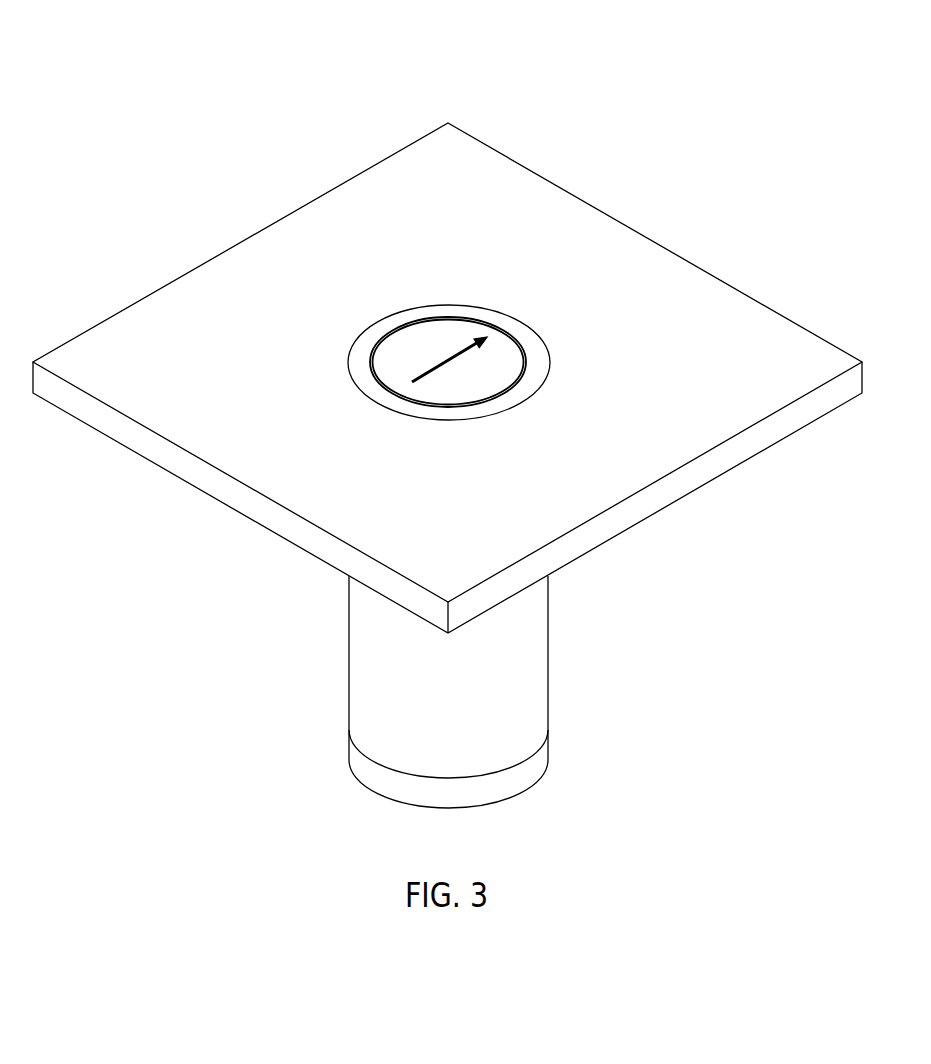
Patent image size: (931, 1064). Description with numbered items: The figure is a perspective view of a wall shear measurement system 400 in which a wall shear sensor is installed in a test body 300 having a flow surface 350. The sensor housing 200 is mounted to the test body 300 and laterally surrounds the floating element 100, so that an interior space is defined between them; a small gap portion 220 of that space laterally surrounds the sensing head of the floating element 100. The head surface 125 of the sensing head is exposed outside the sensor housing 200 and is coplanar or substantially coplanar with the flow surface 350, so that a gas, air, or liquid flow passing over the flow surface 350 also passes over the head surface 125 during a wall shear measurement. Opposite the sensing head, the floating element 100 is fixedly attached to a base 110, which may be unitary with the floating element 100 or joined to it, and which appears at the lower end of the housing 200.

The wall shear measurement system 400 is at (447, 411).
The test body 300 is at (173, 455).
The flow surface 350 is at (477, 523).
The small gap portion 220 is at (375, 350).
The floating element 100 is at (451, 317).
The head surface 125 is at (492, 390).
The sensor housing 200 is at (347, 645).
The base 110 is at (358, 758).